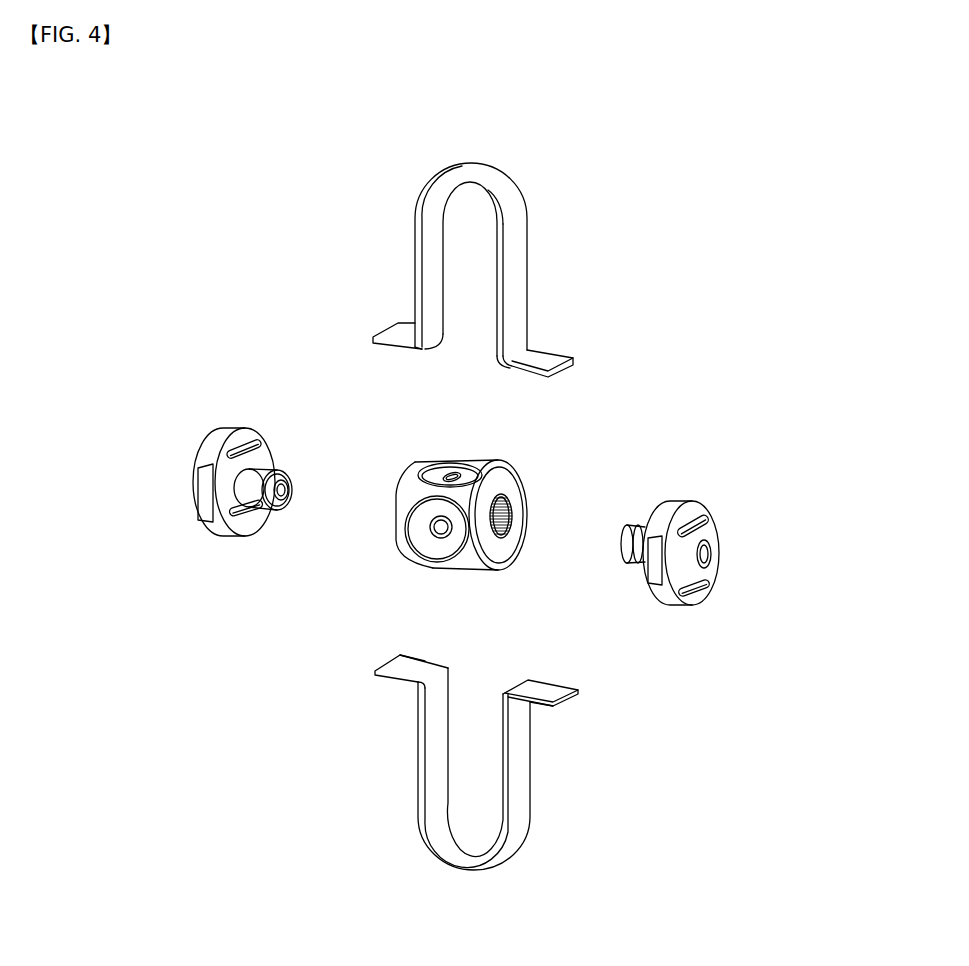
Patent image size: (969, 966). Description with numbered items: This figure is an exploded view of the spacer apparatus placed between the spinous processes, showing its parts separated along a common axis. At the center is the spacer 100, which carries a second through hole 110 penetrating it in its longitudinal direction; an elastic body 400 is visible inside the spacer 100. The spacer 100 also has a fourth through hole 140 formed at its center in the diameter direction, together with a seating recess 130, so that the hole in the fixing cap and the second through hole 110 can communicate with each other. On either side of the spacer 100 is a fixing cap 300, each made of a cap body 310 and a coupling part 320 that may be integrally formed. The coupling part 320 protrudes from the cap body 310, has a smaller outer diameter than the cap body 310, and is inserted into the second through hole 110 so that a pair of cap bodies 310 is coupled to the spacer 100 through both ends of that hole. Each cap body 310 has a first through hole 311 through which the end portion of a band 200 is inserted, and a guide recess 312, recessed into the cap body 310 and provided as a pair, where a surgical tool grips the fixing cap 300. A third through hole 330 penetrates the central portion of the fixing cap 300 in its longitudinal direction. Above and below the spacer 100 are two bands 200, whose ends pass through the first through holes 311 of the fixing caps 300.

The spacer 100 is at (529, 504).
The second through hole 110 is at (507, 562).
The seating recess 130 is at (424, 512).
The fourth through hole 140 is at (444, 517).
The band 200 is at (522, 282).
The fixing cap 300 is at (479, 502).
The cap body 310 is at (473, 512).
The first through hole 311 is at (256, 446).
The guide recess 312 is at (203, 503).
The coupling part 320 is at (509, 509).
The third through hole 330 is at (290, 506).
The elastic body 400 is at (530, 528).